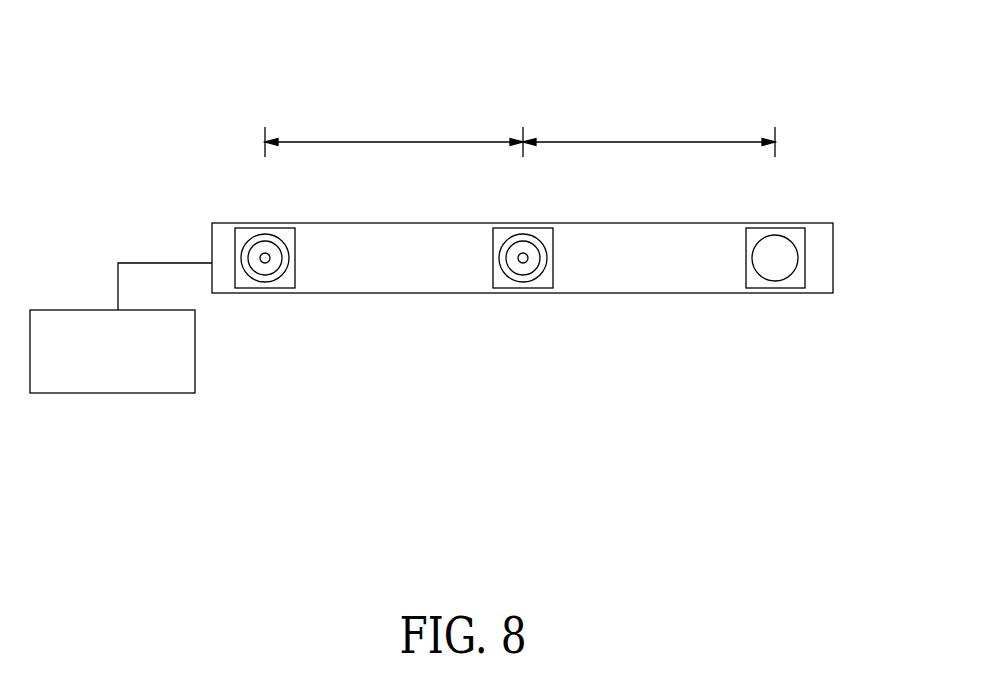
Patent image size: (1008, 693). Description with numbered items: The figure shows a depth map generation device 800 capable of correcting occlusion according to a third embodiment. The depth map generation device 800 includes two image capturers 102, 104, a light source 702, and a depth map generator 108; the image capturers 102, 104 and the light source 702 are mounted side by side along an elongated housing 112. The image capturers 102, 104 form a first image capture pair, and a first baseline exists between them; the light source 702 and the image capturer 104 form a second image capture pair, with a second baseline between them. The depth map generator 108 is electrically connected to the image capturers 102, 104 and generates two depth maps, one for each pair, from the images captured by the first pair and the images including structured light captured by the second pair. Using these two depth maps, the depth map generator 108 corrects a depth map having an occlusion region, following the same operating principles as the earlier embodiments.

The depth map generation device 800 is at (188, 84).
The housing / frame 112 is at (835, 262).
The image capturer 102 is at (248, 288).
The image capturer 104 is at (523, 288).
The light source 702 is at (775, 288).
The depth map generator 108 is at (118, 393).